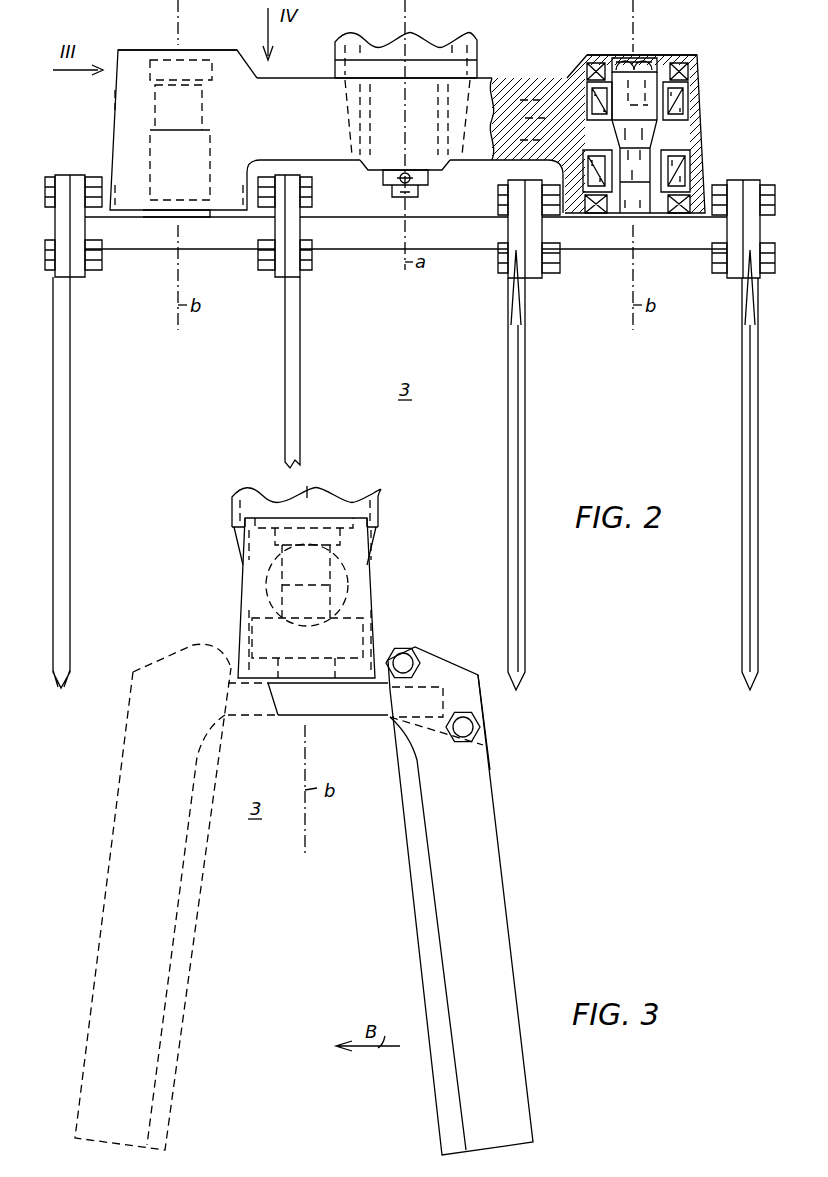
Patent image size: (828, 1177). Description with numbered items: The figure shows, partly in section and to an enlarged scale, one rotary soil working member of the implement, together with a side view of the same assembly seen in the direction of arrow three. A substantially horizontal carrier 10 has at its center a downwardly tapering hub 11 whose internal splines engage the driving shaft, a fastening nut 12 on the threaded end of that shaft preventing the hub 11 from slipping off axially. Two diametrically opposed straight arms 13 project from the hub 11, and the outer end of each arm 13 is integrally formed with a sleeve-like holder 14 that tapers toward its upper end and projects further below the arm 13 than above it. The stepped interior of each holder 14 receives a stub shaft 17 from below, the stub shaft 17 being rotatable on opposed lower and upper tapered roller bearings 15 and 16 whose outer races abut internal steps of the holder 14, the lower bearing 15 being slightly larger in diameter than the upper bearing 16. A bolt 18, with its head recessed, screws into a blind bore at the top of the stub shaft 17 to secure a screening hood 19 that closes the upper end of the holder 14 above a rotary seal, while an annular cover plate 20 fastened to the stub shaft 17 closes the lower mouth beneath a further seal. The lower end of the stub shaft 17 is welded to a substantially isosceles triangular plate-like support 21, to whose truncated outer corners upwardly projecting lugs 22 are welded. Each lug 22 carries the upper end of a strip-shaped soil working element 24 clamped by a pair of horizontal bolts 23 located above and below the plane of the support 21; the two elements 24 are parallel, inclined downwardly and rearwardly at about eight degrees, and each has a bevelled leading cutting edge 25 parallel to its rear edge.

In FIG. 2, the carrier 10 is at (518, 72).
In FIG. 2, the hub 11 is at (340, 62).
In FIG. 3, the hub 11 is at (373, 540).
In FIG. 2, the fastening nut 12 is at (418, 183).
In FIG. 2, the arm 13 is at (338, 163).
In FIG. 3, the arm 13 is at (345, 572).
In FIG. 2, the holder 14 is at (118, 100).
In FIG. 3, the holder 14 is at (240, 616).
In FIG. 2, the lower tapered roller bearing 15 is at (690, 168).
In FIG. 2, the upper tapered roller bearing 16 is at (690, 102).
In FIG. 2, the stub shaft 17 is at (656, 138).
In FIG. 3, the stub shaft 17 is at (330, 605).
In FIG. 2, the bolt 18 is at (634, 58).
In FIG. 2, the screening hood 19 is at (152, 50).
In FIG. 2, the annular cover plate 20 is at (683, 214).
In FIG. 2, the support 21 is at (198, 249).
In FIG. 3, the support 21 is at (355, 722).
In FIG. 2, the lug 22 is at (83, 278).
In FIG. 3, the lug 22 is at (478, 710).
In FIG. 2, the bolt 23 is at (96, 178).
In FIG. 3, the bolt 23 is at (467, 712).
In FIG. 2, the soil working element 24 is at (285, 402).
In FIG. 3, the soil working element 24 is at (124, 840).
In FIG. 2, the cutting edge 25 is at (508, 458).
In FIG. 3, the cutting edge 25 is at (197, 920).